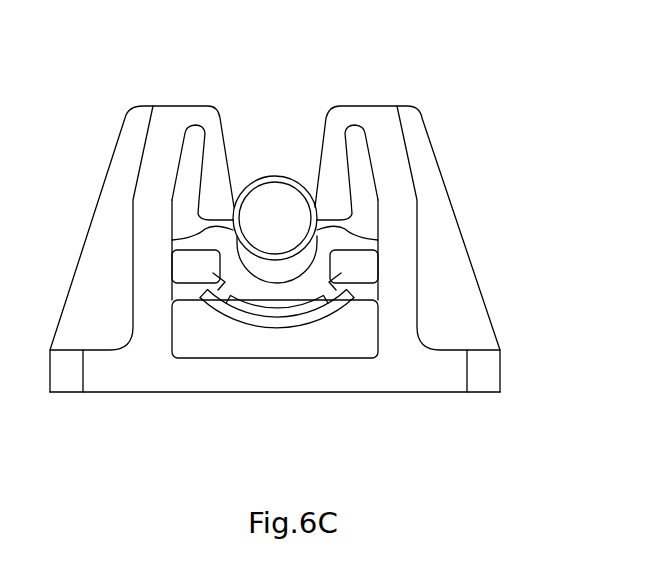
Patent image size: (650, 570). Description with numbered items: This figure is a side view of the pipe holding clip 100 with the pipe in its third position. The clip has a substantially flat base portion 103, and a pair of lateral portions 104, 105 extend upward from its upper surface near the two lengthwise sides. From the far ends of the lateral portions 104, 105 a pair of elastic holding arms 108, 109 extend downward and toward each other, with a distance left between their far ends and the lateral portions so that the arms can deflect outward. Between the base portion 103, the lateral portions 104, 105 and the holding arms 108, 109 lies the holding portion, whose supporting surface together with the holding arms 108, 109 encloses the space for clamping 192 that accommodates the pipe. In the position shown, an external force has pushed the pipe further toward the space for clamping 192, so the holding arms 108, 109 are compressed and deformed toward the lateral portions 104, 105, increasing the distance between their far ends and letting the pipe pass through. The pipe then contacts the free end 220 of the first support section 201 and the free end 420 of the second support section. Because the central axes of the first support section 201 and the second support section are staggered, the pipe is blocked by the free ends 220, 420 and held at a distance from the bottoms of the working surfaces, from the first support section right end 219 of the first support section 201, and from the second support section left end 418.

The pipe holding clip 100 is at (490, 133).
The base portion 103 is at (388, 370).
The lateral portion 104 is at (148, 305).
The lateral portion 105 is at (408, 320).
The holding arm 108 is at (234, 206).
The holding arm 109 is at (322, 191).
The second support section left end 418 is at (229, 238).
The space for clamping 192 is at (273, 272).
The free end of the first support section 220 is at (243, 275).
The first support section right end 219 is at (378, 247).
The free end of the second support section 420 is at (331, 248).
The first support section 201 is at (332, 273).